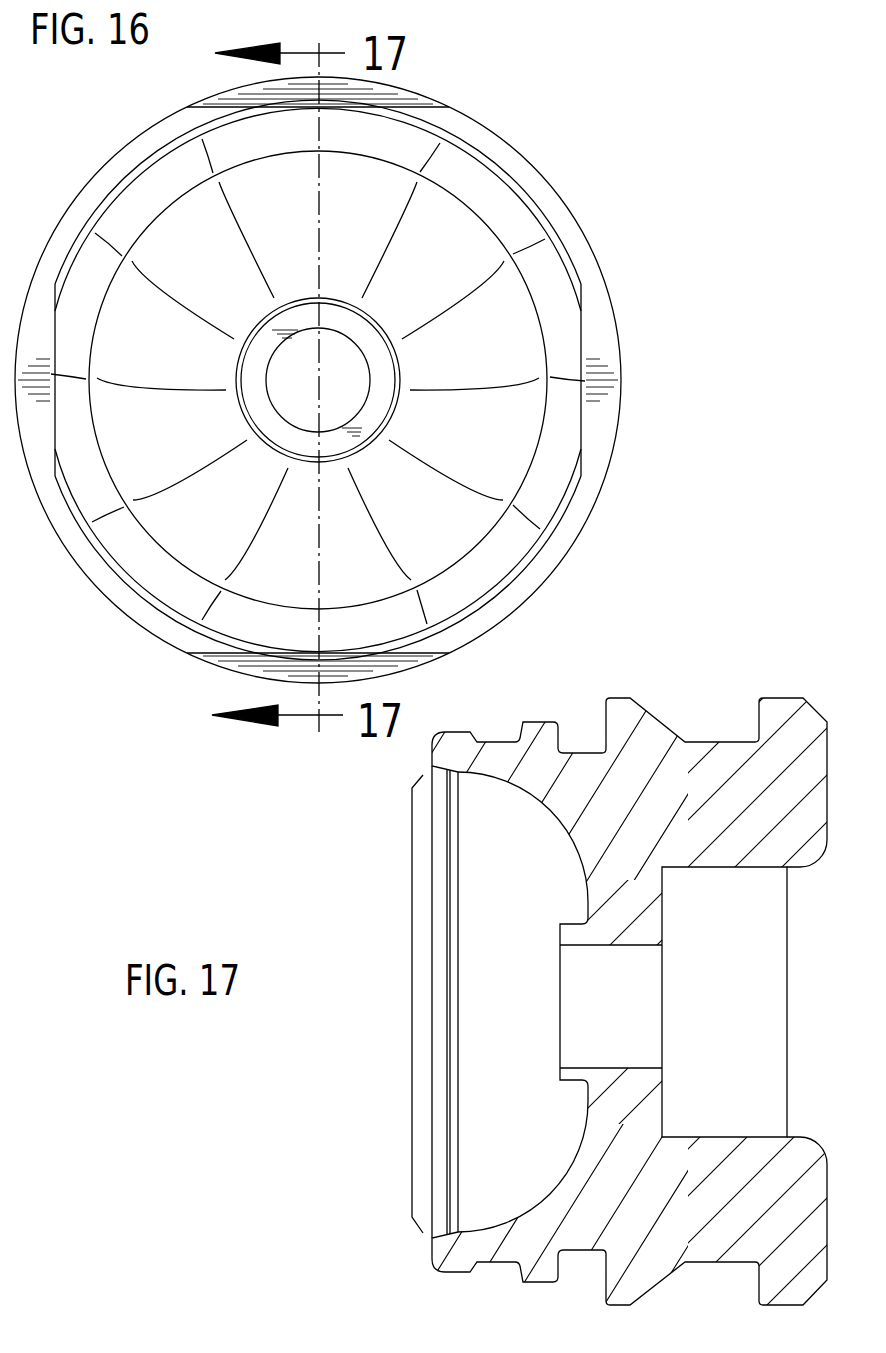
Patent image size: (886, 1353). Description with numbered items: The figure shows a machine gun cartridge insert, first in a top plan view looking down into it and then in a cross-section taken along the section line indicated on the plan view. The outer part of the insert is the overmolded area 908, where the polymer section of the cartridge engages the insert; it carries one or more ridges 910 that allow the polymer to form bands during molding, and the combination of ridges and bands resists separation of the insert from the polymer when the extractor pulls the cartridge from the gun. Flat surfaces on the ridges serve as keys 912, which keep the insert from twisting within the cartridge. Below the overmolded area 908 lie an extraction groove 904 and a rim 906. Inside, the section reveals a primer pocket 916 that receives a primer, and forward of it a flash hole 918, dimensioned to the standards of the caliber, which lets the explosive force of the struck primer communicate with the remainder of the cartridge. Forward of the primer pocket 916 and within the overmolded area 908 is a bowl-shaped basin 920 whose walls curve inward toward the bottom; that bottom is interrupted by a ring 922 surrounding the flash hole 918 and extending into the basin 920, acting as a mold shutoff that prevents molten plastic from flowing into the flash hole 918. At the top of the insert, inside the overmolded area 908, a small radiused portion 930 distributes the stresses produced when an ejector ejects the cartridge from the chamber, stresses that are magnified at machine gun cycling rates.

In FIG. 17, the extraction groove 904 is at (707, 742).
In FIG. 17, the rim 906 is at (783, 698).
In FIG. 17, the overmolded area 908 is at (465, 731).
In FIG. 17, the ridges 910 is at (542, 728).
In FIG. 16, the keys 912 is at (597, 334).
In FIG. 17, the primer pocket 916 is at (741, 1024).
In FIG. 16, the flash hole 918 is at (312, 388).
In FIG. 17, the flash hole 918 is at (620, 1020).
In FIG. 16, the basin 920 is at (437, 514).
In FIG. 17, the basin 920 is at (555, 817).
In FIG. 16, the ring 922 is at (366, 337).
In FIG. 17, the ring 922 is at (570, 1081).
In FIG. 17, the radiused portion 930 is at (412, 968).